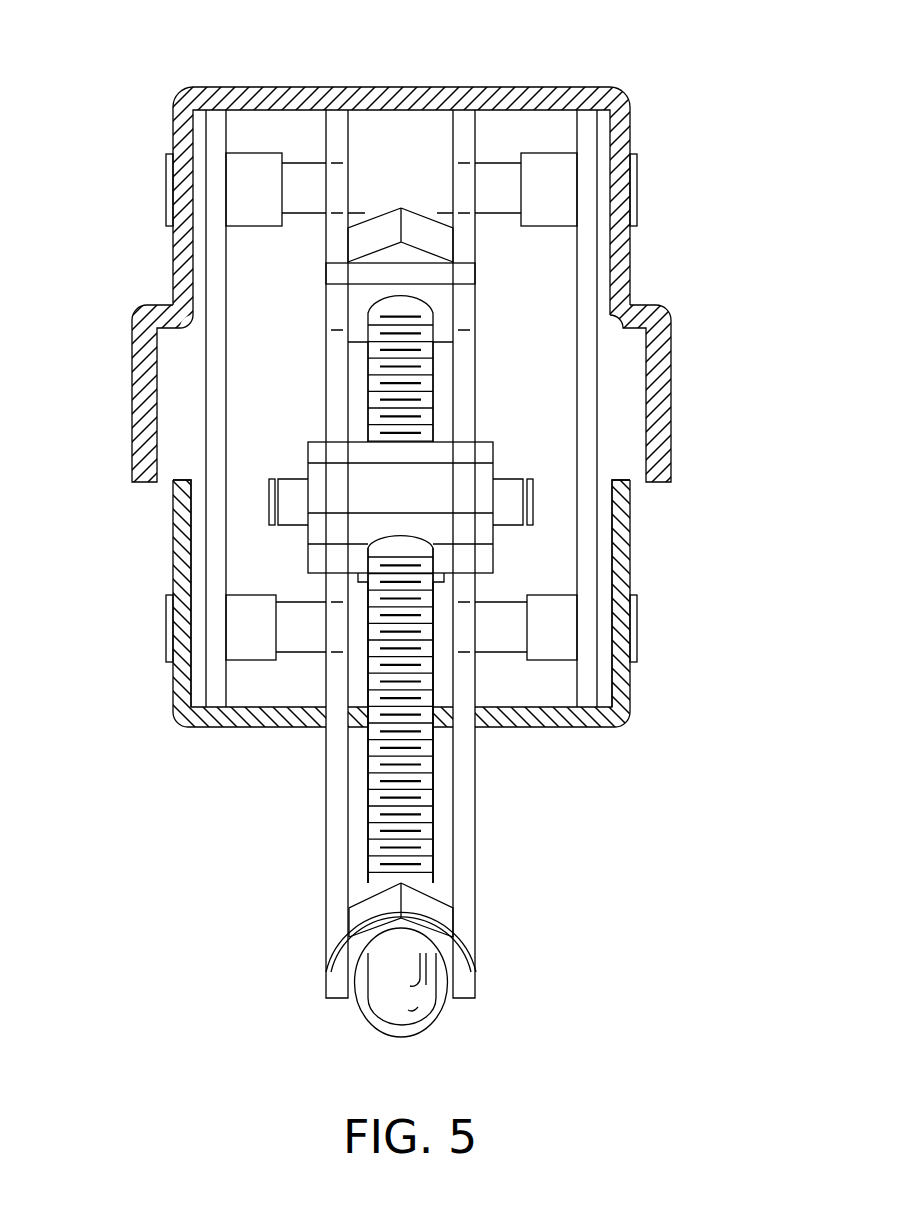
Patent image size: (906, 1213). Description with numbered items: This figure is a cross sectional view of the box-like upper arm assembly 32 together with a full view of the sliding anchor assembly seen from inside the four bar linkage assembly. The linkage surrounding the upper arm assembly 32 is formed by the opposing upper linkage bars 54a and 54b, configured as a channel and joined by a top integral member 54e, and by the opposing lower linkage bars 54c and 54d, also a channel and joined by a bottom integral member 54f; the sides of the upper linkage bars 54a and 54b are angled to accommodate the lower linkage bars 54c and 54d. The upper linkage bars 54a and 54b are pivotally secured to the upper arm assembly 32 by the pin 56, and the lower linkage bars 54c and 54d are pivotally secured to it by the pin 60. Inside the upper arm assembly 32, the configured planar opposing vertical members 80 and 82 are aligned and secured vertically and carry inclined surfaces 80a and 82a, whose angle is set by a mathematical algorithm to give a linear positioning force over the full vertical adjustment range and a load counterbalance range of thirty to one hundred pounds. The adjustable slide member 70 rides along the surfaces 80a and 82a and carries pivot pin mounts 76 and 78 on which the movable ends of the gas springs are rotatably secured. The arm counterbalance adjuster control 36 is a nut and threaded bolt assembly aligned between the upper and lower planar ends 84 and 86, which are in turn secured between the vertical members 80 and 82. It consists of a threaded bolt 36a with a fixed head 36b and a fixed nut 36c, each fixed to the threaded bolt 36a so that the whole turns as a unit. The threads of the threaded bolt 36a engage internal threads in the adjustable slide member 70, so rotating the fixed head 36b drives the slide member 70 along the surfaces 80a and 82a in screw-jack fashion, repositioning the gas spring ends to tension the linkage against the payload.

The upper arm assembly 32 is at (583, 297).
The arm counterbalance adjuster control 36 is at (305, 1028).
The threaded bolt 36a is at (423, 833).
The fixed head 36b is at (447, 970).
The fixed nut 36c is at (369, 231).
The upper linkage bar 54a is at (140, 385).
The upper linkage bar 54b is at (661, 417).
The lower linkage bar 54c is at (182, 516).
The lower linkage bar 54d is at (623, 517).
The top integral member 54e is at (445, 95).
The bottom integral member 54f is at (568, 720).
The pin 56 is at (634, 192).
The pin 60 is at (638, 630).
The adjustable slide member 70 is at (477, 456).
The pivot pin mount 76 is at (298, 493).
The pivot pin mount 78 is at (503, 493).
The vertical member 80 is at (325, 825).
The surface 80a is at (337, 777).
The vertical member 82 is at (475, 813).
The surface 82a is at (463, 772).
The upper planar end 84 is at (362, 297).
The lower planar end 86 is at (338, 948).